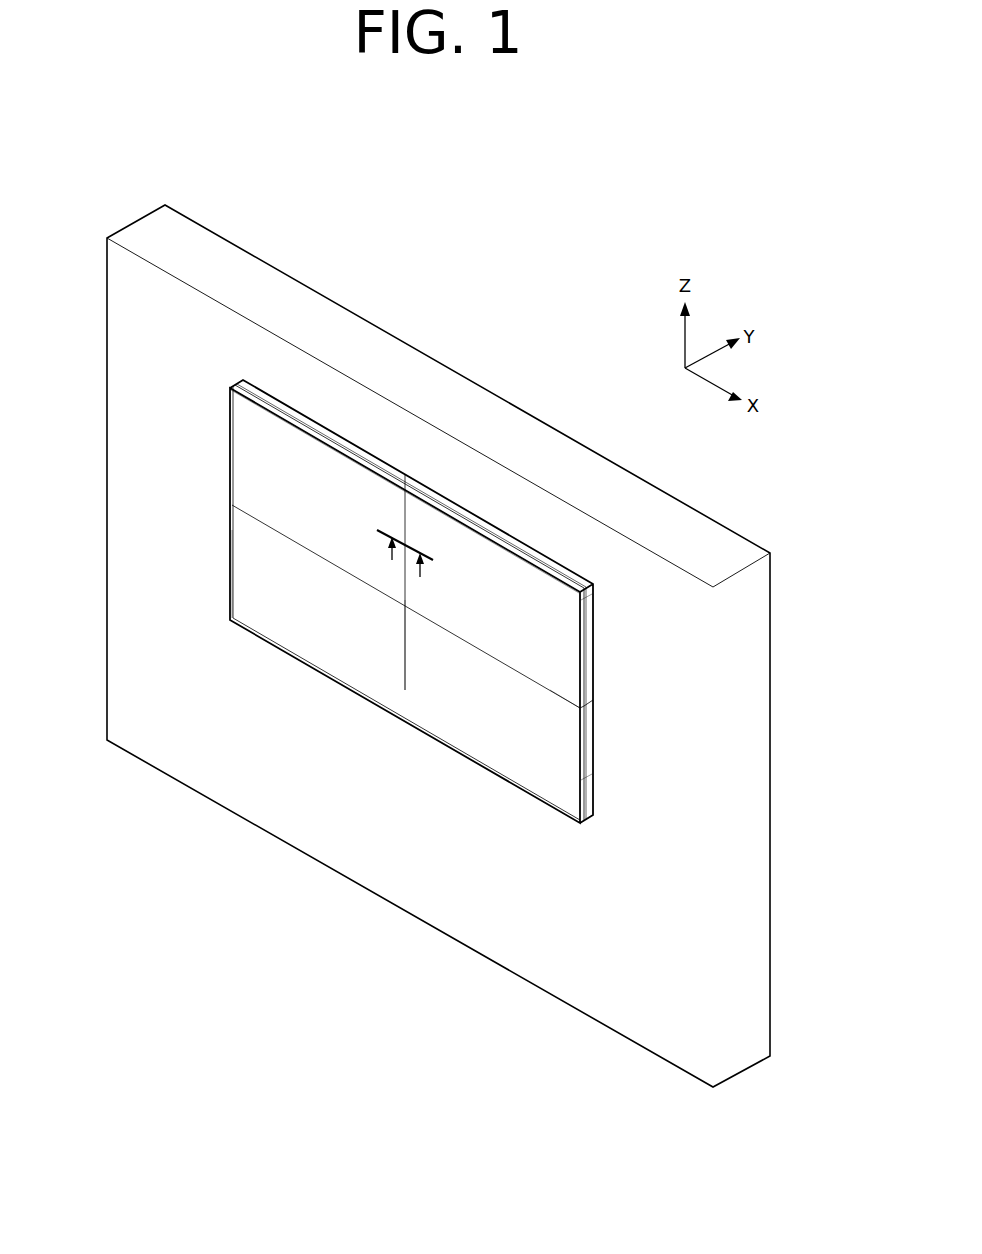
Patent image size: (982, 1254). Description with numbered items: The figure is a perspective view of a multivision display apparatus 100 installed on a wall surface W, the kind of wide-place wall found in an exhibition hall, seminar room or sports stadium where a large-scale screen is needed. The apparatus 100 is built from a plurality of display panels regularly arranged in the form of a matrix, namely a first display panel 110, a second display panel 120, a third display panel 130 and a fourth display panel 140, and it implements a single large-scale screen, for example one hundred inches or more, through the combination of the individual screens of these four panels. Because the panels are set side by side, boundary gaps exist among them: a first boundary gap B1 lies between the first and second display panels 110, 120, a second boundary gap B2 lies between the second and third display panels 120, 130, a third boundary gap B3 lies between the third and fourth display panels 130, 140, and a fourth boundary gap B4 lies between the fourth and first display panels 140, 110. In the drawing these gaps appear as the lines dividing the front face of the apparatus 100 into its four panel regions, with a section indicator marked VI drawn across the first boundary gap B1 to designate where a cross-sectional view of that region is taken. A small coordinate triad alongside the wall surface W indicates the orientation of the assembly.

The multivision display apparatus 100 is at (273, 388).
The first display panel 110 is at (242, 443).
The second display panel 120 is at (563, 627).
The third display panel 130 is at (563, 775).
The fourth display panel 140 is at (248, 603).
The first boundary gap B1 is at (405, 523).
The second boundary gap B2 is at (550, 688).
The third boundary gap B3 is at (405, 692).
The fourth boundary gap B4 is at (262, 527).
The wall surface W is at (652, 573).
The section line VI is at (405, 568).